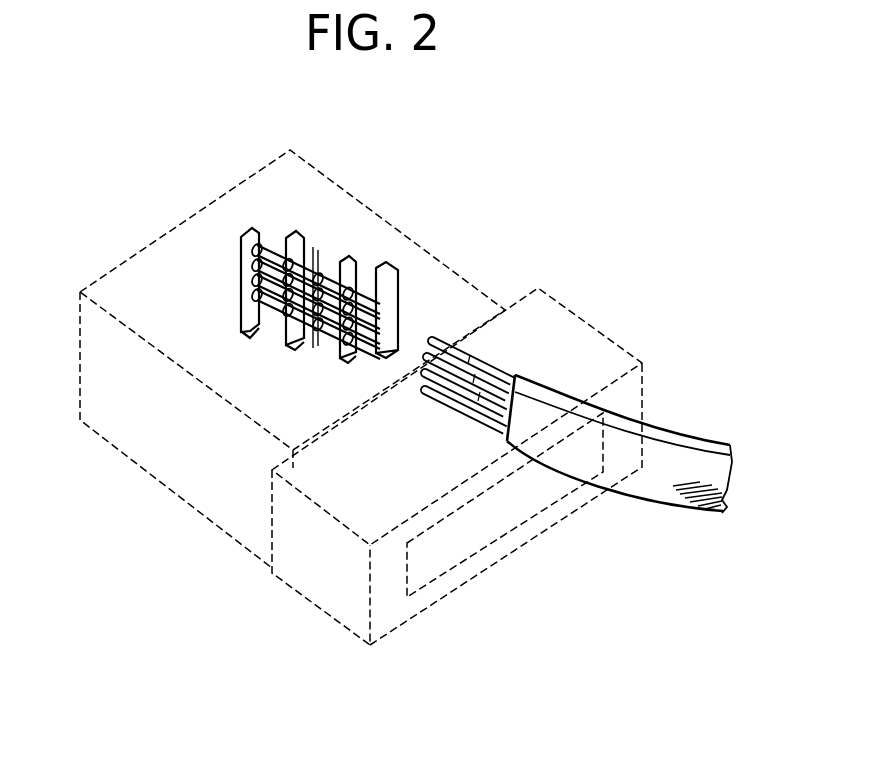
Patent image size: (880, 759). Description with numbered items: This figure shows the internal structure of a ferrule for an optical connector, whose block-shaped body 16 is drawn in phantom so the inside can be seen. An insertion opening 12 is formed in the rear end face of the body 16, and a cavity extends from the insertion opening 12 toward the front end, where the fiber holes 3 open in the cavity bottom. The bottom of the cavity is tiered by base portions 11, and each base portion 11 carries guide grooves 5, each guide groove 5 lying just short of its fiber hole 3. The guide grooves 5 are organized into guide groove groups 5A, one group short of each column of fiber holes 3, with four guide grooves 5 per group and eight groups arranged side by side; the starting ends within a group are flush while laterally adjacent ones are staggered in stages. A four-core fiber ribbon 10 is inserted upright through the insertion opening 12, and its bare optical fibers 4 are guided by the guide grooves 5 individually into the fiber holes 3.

The fiber hole 3 is at (241, 288).
The optical fiber 4 is at (500, 380).
The guide groove 5 is at (277, 236).
The guide groove group 5A is at (405, 322).
The fiber ribbon 10 is at (690, 433).
The base portion 11 is at (313, 247).
The insertion opening 12 is at (503, 520).
The body 16 is at (387, 216).